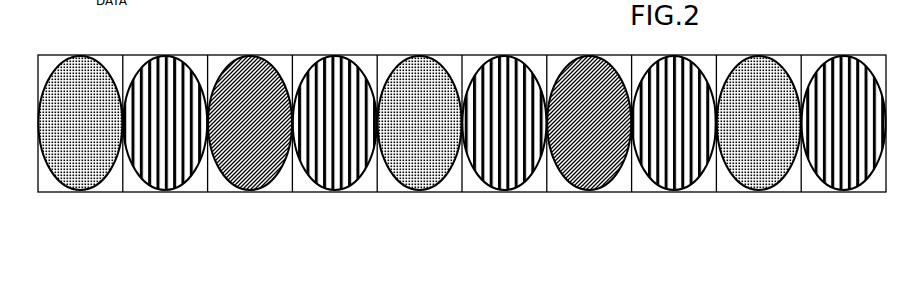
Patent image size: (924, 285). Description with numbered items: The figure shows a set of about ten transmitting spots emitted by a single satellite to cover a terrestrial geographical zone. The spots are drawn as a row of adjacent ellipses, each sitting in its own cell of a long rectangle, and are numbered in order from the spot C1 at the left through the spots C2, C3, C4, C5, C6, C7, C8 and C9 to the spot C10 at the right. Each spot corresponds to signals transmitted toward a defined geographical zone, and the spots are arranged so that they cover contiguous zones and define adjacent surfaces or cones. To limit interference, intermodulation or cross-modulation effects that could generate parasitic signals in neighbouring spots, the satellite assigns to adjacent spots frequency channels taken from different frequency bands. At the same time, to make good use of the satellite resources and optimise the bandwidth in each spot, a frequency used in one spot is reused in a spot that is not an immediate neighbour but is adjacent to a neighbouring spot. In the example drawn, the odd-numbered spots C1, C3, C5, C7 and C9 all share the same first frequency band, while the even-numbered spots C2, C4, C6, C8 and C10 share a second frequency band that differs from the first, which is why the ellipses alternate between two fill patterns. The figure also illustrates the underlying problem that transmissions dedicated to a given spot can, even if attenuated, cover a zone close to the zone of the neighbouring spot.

The transmitting spot C1 is at (80, 180).
The transmitting spot C2 is at (165, 180).
The transmitting spot C3 is at (250, 180).
The transmitting spot C4 is at (335, 180).
The transmitting spot C5 is at (420, 180).
The transmitting spot C6 is at (504, 180).
The transmitting spot C7 is at (589, 180).
The transmitting spot C8 is at (674, 180).
The transmitting spot C9 is at (759, 180).
The transmitting spot C10 is at (844, 180).